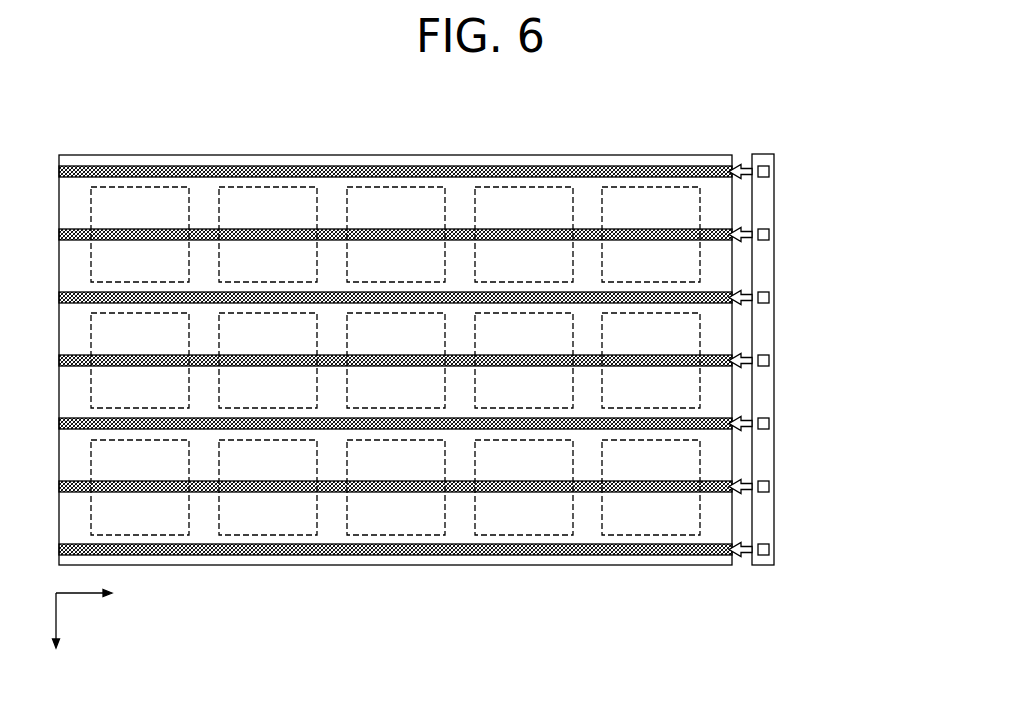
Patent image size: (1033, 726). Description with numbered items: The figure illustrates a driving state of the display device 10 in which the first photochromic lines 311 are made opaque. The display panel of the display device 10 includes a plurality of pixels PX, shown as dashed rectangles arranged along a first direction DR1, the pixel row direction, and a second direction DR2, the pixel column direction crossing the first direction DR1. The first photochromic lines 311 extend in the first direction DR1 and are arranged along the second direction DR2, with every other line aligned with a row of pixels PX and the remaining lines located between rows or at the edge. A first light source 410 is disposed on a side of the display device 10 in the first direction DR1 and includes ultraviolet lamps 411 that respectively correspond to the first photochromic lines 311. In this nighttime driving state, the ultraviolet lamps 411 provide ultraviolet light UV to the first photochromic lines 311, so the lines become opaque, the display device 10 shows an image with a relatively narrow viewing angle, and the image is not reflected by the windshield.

The display device 10 is at (803, 143).
The first photochromic lines 311 is at (272, 171).
The pixels PX is at (147, 186).
The first light source 410 is at (765, 153).
The ultraviolet lamps 411 is at (771, 548).
The ultraviolet light UV is at (742, 556).
The first direction DR1 is at (105, 595).
The second direction DR2 is at (56, 637).